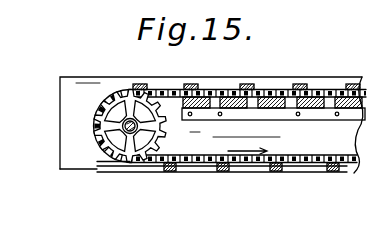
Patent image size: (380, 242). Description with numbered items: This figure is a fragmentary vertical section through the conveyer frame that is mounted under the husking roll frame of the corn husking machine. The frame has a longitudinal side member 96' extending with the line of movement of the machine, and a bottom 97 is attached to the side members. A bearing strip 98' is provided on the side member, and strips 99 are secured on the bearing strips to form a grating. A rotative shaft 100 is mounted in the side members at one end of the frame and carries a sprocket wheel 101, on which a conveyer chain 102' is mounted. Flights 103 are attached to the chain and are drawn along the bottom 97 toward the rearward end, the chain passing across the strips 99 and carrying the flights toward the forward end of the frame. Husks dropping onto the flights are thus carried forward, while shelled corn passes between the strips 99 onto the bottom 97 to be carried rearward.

The side member 96' is at (208, 105).
The bottom 97 is at (198, 174).
The bearing strip 98' is at (273, 131).
The strip 99 is at (202, 93).
The rotative shaft 100 is at (128, 107).
The sprocket wheel 101 is at (100, 129).
The conveyer chain 102' is at (248, 76).
The flight 103 is at (247, 86).